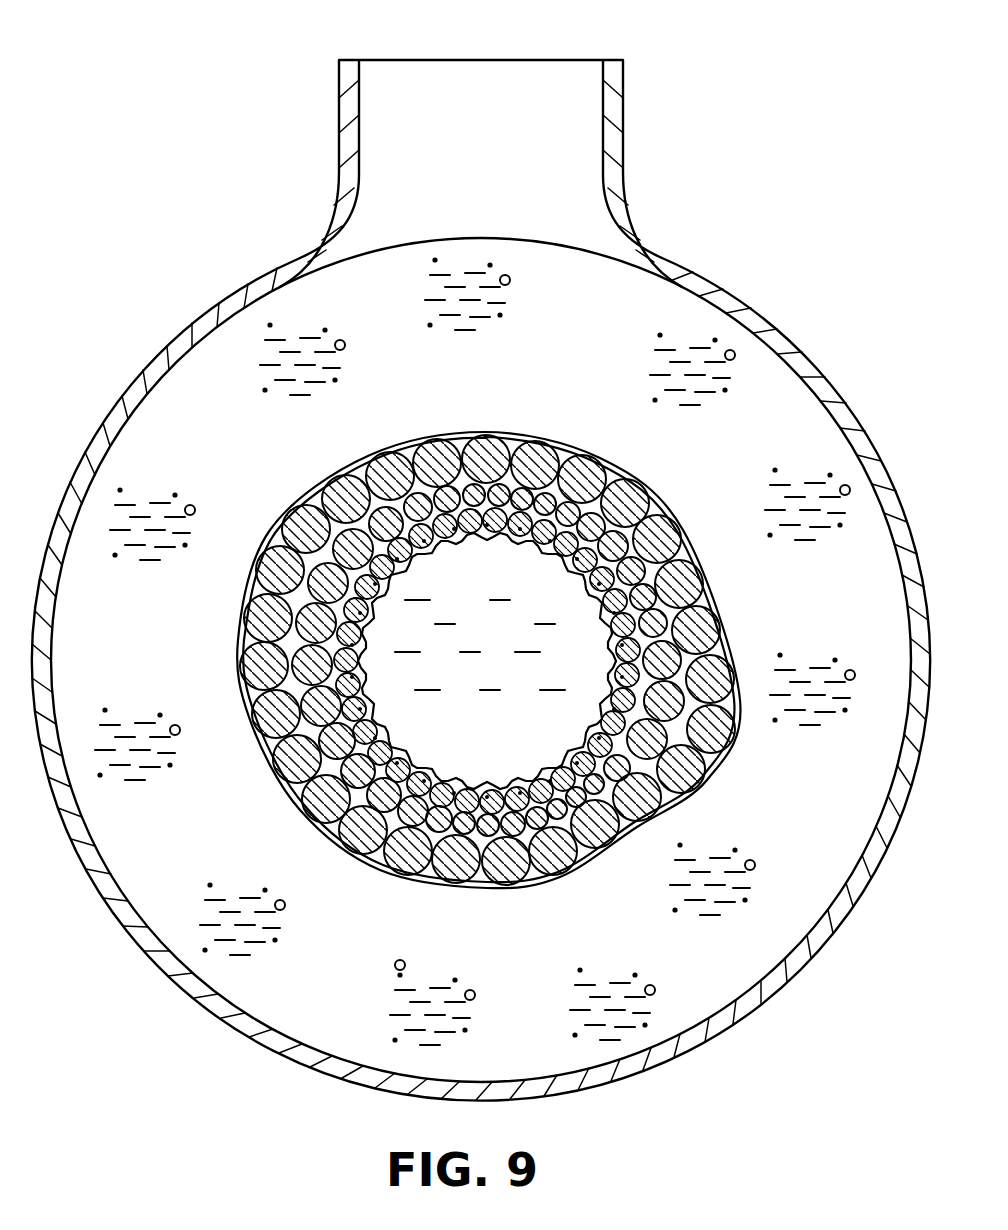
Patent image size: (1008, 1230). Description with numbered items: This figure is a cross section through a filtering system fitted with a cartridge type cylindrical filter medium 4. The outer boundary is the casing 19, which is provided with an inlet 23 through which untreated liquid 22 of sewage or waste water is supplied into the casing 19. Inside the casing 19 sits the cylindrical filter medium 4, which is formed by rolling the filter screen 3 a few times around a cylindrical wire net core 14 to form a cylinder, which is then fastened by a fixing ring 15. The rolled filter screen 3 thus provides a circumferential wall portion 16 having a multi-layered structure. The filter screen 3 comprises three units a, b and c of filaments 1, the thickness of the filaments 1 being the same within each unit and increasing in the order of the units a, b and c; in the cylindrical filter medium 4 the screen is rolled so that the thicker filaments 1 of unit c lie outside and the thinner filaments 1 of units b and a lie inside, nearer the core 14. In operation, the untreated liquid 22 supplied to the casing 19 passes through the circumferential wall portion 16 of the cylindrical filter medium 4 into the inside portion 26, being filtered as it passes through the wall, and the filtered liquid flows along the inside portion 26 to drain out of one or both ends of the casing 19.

The inlet 23 is at (555, 72).
The untreated liquid 22 is at (272, 327).
The casing 19 is at (672, 300).
The filament 1 is at (400, 456).
The inside portion 26 is at (495, 568).
The unit of filaments c is at (622, 534).
The unit of filaments b is at (640, 566).
The unit of filaments a is at (344, 608).
The cylindrical filter medium 4 is at (267, 543).
The fixing ring 15 is at (244, 666).
The circumferential wall portion 16 is at (318, 793).
The wire net core 14 is at (448, 777).
The filter screen 3 is at (459, 661).